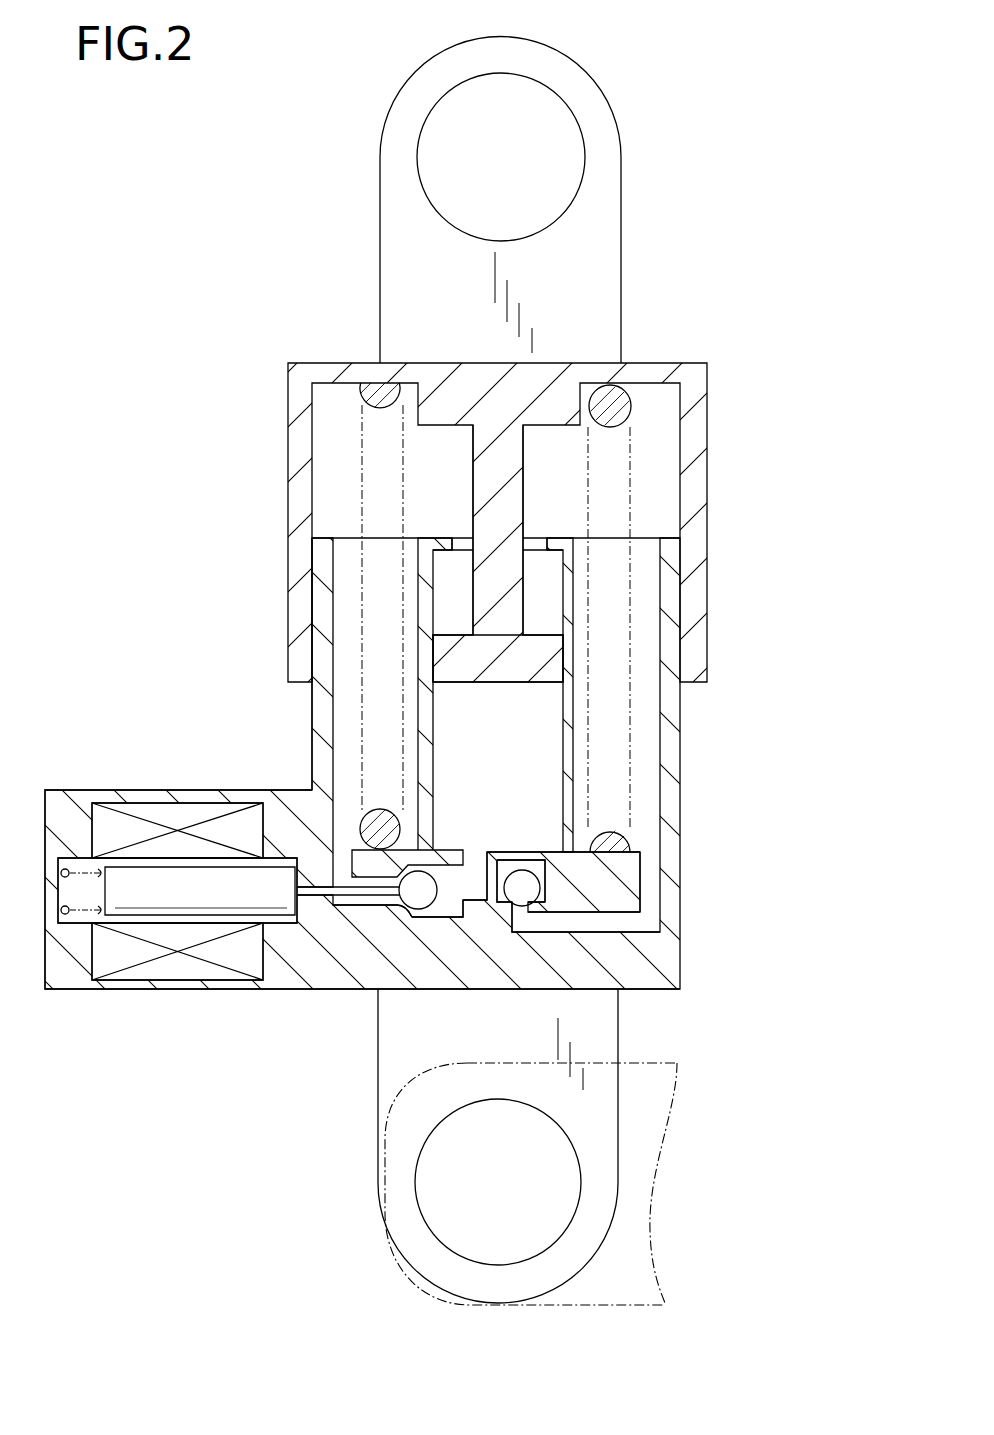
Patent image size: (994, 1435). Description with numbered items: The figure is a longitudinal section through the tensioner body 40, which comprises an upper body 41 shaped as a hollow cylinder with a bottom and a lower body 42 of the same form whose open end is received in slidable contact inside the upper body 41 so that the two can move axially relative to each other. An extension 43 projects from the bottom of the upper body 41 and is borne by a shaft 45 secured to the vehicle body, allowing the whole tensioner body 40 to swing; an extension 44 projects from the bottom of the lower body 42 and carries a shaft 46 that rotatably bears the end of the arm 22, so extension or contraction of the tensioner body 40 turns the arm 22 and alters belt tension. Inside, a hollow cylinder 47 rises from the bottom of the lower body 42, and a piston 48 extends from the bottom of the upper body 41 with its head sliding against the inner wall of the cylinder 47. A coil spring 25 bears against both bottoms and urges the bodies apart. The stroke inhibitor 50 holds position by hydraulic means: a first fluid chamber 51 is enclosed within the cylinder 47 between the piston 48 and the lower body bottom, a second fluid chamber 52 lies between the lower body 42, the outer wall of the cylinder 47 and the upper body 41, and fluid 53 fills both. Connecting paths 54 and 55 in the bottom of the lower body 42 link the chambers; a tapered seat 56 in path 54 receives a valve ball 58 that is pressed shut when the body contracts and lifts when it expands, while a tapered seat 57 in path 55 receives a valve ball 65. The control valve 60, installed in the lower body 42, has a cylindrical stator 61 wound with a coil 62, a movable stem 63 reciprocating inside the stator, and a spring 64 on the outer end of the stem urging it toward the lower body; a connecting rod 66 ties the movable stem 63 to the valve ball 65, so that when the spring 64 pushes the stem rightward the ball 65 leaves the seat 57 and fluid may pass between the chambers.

The tensioner body 40 is at (446, 670).
The upper body 41 is at (484, 548).
The lower body 42 is at (672, 782).
The extension 43 is at (495, 200).
The extension 44 is at (485, 1146).
The shaft 45 is at (428, 152).
The shaft 46 is at (430, 1189).
The hollow cylinder 47 is at (573, 713).
The piston 48 is at (492, 681).
The first fluid chamber 51 is at (535, 742).
The second fluid chamber 52 is at (340, 445).
The fluid 53 is at (472, 748).
The connecting path 54 is at (637, 918).
The connecting path 55 is at (352, 903).
The seat 56 is at (528, 877).
The seat 57 is at (418, 901).
The valve ball 58 is at (522, 896).
The valve ball 65 is at (445, 903).
The connecting rod 66 is at (313, 897).
The control valve 60 is at (362, 829).
The stator 61 is at (130, 802).
The coil 62 is at (170, 804).
The movable stem 63 is at (227, 897).
The spring 64 is at (82, 918).
The coil spring 25 is at (630, 603).
The arm 22 is at (655, 1096).
The stroke inhibitor 50 is at (465, 969).